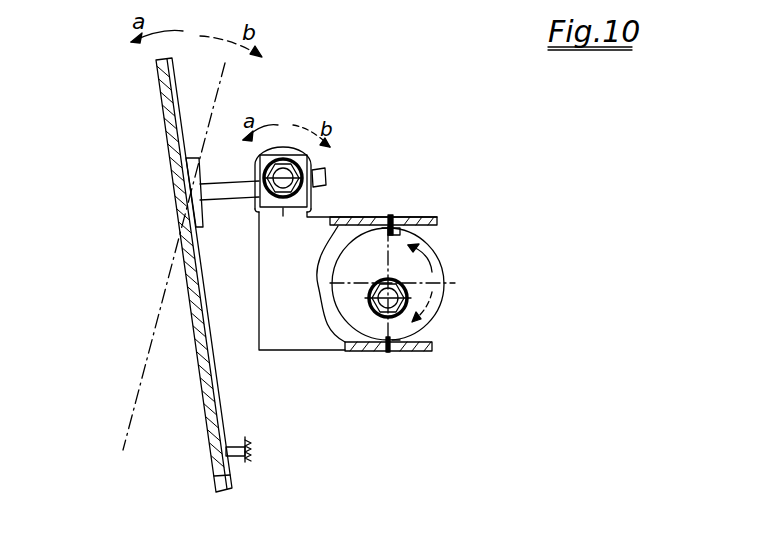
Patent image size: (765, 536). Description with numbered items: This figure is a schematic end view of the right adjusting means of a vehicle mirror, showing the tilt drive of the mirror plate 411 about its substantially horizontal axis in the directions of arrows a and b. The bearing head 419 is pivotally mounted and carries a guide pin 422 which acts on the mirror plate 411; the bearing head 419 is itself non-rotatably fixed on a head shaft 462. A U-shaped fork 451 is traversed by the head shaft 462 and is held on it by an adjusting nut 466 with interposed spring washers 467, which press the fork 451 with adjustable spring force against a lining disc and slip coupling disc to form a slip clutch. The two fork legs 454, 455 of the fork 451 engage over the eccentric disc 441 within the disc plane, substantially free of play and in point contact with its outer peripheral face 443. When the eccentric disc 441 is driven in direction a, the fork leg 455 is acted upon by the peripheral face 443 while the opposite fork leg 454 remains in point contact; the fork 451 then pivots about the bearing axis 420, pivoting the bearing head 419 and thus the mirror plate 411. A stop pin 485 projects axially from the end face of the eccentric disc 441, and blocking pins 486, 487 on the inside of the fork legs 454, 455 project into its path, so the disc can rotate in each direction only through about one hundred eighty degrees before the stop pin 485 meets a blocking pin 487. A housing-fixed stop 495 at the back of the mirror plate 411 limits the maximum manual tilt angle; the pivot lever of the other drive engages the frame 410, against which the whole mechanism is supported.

The frame 410 is at (217, 468).
The mirror plate 411 is at (217, 478).
The bearing head 419 is at (281, 160).
The bearing axis 420 is at (358, 119).
The guide pin 422 is at (200, 208).
The eccentric disc 441 is at (437, 278).
The outer peripheral face 443 is at (444, 283).
The U-shaped fork 451 is at (323, 335).
The fork leg 454 is at (451, 371).
The fork leg 455 is at (444, 181).
The head shaft 462 is at (290, 170).
The adjusting nut 466 is at (257, 170).
The spring washers 467 is at (245, 191).
The stop pin 485 is at (402, 222).
The blocking pin 486 is at (398, 341).
The blocking pin 487 is at (388, 218).
The stop 495 is at (220, 447).